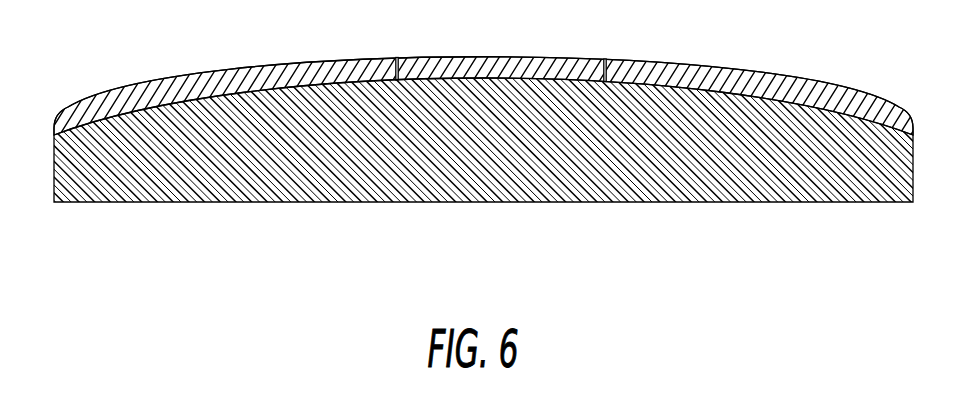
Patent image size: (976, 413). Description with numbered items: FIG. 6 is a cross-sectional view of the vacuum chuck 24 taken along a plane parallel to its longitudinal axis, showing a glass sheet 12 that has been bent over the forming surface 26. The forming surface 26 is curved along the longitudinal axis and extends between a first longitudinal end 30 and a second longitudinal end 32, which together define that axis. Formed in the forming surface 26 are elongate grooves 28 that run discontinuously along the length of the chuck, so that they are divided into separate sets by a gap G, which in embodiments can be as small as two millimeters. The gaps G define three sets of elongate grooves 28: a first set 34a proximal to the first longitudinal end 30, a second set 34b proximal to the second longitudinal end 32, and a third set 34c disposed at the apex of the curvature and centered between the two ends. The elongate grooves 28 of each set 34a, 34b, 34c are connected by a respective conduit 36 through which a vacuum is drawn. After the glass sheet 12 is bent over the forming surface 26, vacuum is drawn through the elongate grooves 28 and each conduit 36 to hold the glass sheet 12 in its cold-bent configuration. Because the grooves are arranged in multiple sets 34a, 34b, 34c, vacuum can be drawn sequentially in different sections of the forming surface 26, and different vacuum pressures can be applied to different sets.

The glass sheet 12 is at (157, 80).
The vacuum chuck 24 is at (53, 168).
The forming surface 26 is at (900, 115).
The elongate grooves 28 is at (291, 90).
The first longitudinal end 30 is at (69, 99).
The second longitudinal end 32 is at (902, 220).
The first set of elongate grooves 34a is at (259, 80).
The second set of elongate grooves 34b is at (818, 95).
The third set of elongate grooves 34c is at (540, 66).
The conduit 36 is at (216, 126).
The gap G is at (397, 76).